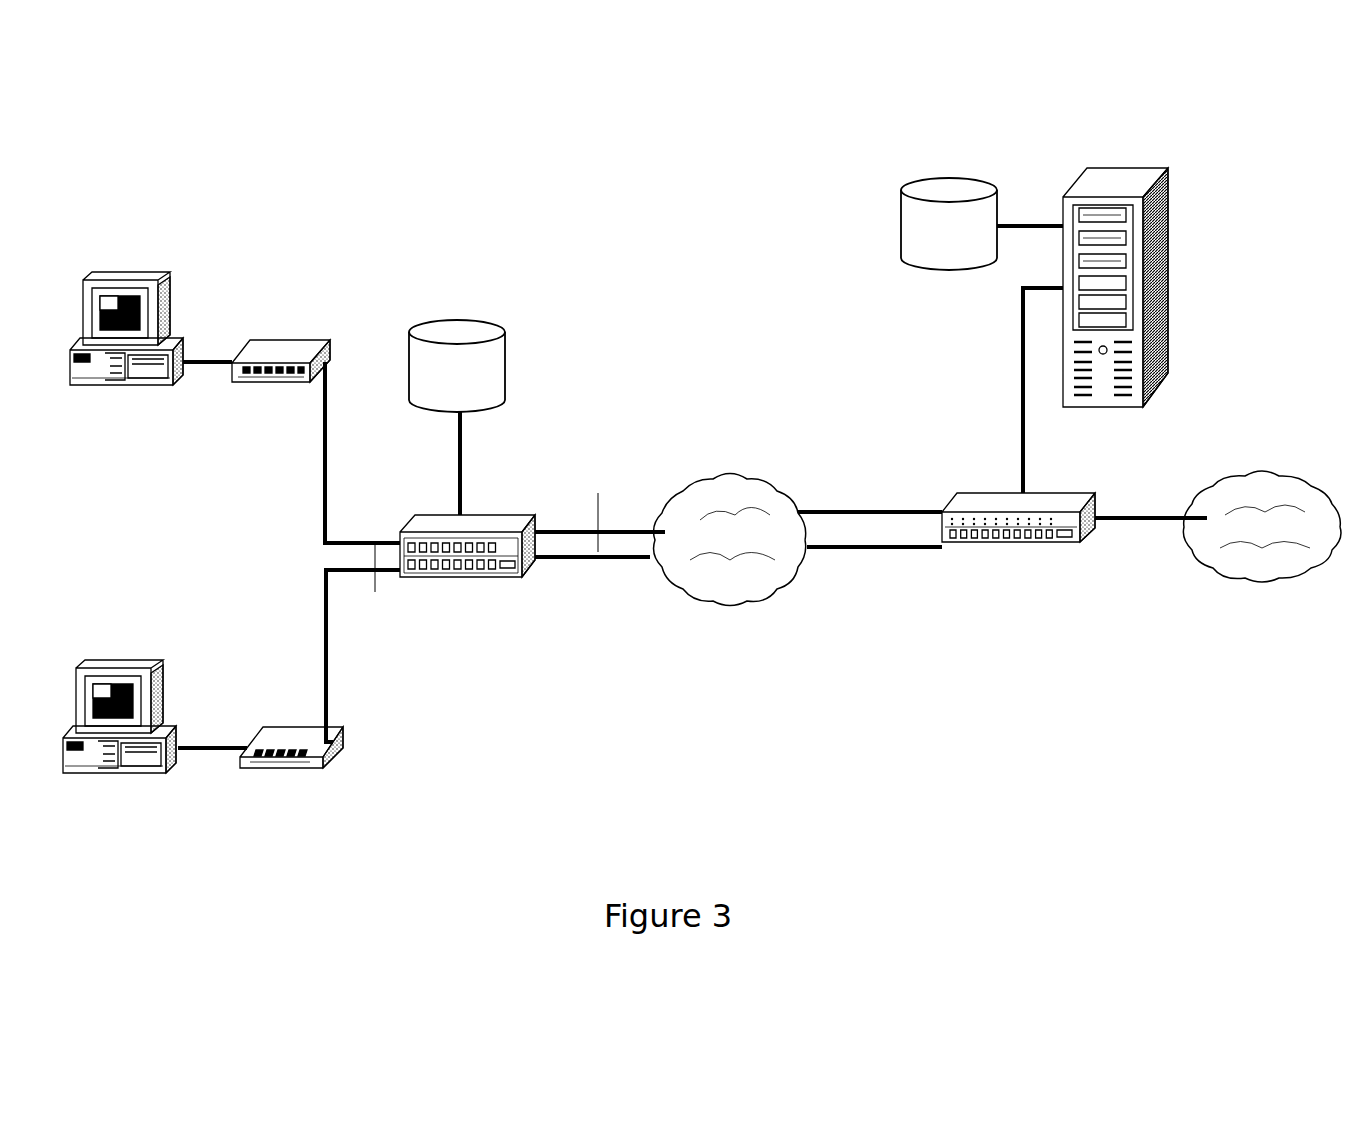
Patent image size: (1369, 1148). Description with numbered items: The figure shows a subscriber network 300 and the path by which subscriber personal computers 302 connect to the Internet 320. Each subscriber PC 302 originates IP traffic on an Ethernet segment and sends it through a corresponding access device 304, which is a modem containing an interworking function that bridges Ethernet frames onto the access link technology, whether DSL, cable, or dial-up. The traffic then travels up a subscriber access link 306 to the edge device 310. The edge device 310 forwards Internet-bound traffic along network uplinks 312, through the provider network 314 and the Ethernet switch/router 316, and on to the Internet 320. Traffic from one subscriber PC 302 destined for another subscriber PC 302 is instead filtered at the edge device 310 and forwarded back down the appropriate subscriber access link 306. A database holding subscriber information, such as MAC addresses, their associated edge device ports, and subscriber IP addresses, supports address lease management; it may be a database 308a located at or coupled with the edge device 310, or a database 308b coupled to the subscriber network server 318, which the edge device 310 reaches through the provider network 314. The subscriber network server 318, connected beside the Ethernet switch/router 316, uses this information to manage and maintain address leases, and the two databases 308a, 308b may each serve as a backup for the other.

The subscriber network 300 is at (698, 424).
The subscriber personal computer 302 is at (195, 555).
The access device 304 is at (357, 553).
The subscriber access link 306 is at (367, 570).
The database 308a is at (487, 318).
The database 308b is at (910, 178).
The edge device 310 is at (523, 573).
The network uplink 312 is at (570, 526).
The provider network 314 is at (792, 590).
The Ethernet switch/router 316 is at (1075, 542).
The subscriber network server 318 is at (1170, 182).
The Internet 320 is at (1230, 492).